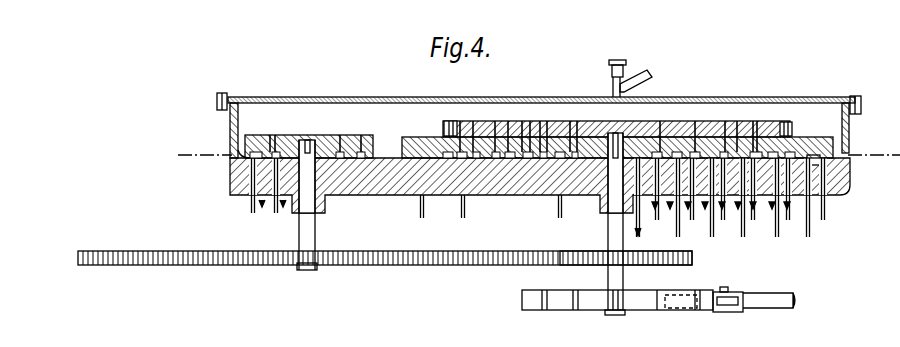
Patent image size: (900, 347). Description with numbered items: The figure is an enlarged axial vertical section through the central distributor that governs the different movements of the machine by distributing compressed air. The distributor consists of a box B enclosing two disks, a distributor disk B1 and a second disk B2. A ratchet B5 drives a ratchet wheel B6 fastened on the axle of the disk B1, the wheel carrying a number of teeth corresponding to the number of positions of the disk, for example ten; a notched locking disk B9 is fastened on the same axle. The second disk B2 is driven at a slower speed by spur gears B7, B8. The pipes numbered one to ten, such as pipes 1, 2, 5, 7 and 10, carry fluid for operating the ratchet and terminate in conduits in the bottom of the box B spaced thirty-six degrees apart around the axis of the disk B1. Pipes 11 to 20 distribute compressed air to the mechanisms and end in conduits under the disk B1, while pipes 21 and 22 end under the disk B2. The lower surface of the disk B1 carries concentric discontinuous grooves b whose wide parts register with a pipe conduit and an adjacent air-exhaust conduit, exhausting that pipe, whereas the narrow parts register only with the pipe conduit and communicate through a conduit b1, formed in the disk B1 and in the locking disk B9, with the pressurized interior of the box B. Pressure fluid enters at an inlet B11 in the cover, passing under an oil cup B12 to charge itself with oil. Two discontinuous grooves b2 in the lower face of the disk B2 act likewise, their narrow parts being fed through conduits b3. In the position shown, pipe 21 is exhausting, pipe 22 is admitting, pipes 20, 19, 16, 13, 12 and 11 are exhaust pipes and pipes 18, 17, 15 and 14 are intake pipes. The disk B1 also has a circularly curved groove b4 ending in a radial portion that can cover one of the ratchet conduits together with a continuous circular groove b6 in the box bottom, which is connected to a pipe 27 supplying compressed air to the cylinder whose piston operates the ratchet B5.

The pipe 1 is at (463, 217).
The pipe 2 is at (421, 217).
The pipe 5 is at (539, 146).
The pipe 7 is at (808, 205).
The pipe 10 is at (559, 217).
The pipe 11 is at (788, 198).
The pipe 12 is at (776, 205).
The pipe 13 is at (754, 198).
The pipe 14 is at (742, 205).
The pipe 15 is at (724, 198).
The pipe 16 is at (711, 205).
The pipe 17 is at (693, 198).
The pipe 18 is at (677, 205).
The pipe 19 is at (658, 198).
The pipe 20 is at (637, 205).
The pipe 21 is at (253, 198).
The pipe 22 is at (276, 198).
The pipe 27 is at (824, 198).
The box B is at (503, 194).
The distributor disk B1 is at (797, 141).
The distributor disk B2 is at (346, 137).
The ratchet B5 is at (718, 304).
The ratchet wheel B6 is at (603, 303).
The spur gear B7 is at (694, 260).
The spur gear B8 is at (186, 262).
The notched locking disk B9 is at (655, 123).
The inlet B11 is at (652, 74).
The oil cup B12 is at (609, 66).
The discontinuous grooves b is at (530, 137).
The conduit b1 is at (570, 137).
The circular discontinuous grooves b2 is at (240, 162).
The conduits b3 is at (342, 136).
The circularly curved groove b4 is at (837, 150).
The continuous circular groove b6 is at (417, 165).